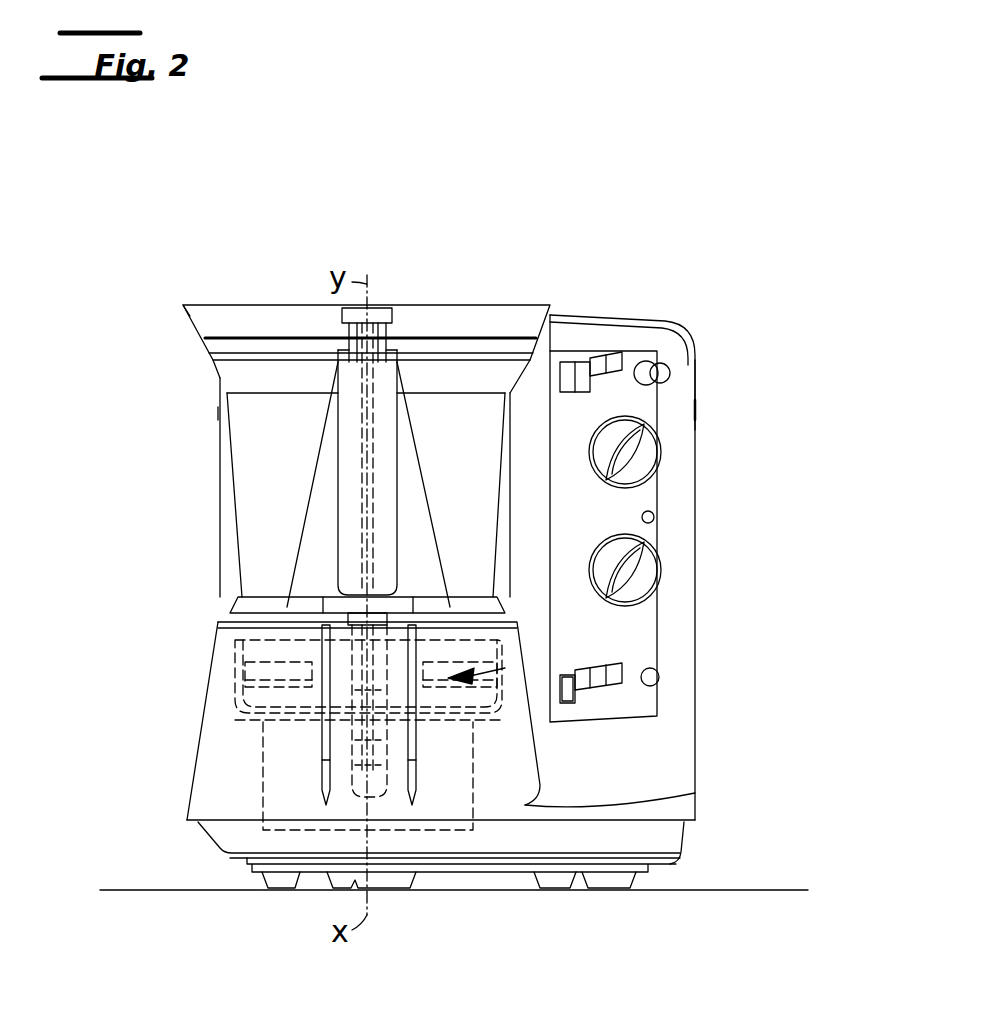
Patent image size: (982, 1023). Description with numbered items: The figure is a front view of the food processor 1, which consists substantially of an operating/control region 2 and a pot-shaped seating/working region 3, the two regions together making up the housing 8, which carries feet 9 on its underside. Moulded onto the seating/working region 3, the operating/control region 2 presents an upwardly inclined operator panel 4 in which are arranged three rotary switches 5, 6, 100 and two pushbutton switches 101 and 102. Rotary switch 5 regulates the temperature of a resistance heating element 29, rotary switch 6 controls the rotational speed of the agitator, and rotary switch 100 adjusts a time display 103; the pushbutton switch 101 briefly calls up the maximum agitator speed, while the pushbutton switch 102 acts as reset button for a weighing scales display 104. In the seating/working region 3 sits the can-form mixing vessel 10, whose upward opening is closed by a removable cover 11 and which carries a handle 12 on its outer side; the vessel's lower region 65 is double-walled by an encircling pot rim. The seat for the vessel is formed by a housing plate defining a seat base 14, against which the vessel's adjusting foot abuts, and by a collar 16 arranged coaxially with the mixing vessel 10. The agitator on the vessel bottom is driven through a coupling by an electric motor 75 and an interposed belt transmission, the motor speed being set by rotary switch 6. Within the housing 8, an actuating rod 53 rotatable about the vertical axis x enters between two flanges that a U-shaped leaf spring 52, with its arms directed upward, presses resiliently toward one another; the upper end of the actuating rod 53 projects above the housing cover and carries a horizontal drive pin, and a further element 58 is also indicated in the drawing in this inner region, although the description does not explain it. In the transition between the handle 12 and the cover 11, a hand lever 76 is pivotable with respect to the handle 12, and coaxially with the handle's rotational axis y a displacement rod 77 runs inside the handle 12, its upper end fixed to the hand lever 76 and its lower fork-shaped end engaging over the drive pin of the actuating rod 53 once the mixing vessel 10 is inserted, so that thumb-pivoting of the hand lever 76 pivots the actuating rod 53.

The food processor 1 is at (618, 273).
The operating/control region 2 is at (667, 390).
The seating/working region 3 is at (228, 756).
The operator panel 4 is at (643, 352).
The rotary switch 5 is at (648, 462).
The rotary switch 6 is at (648, 580).
The housing 8 is at (665, 778).
The feet 9 is at (605, 882).
The mixing vessel 10 is at (280, 472).
The cover 11 is at (217, 318).
The handle 12 is at (383, 390).
The seat base 14 is at (282, 714).
The collar 16 is at (580, 700).
The resistance heating element 29 is at (505, 668).
The leaf spring 52 is at (385, 790).
The actuating rod 53 is at (322, 633).
The coil 58 is at (362, 680).
The lower region 65 is at (265, 688).
The electric motor 75 is at (322, 800).
The hand lever 76 is at (340, 308).
The displacement rod 77 is at (365, 407).
The rotary switch 100 is at (672, 367).
The pushbutton switch 101 is at (653, 518).
The pushbutton switch 102 is at (660, 678).
The time display 103 is at (588, 372).
The weighing scales display 104 is at (568, 697).